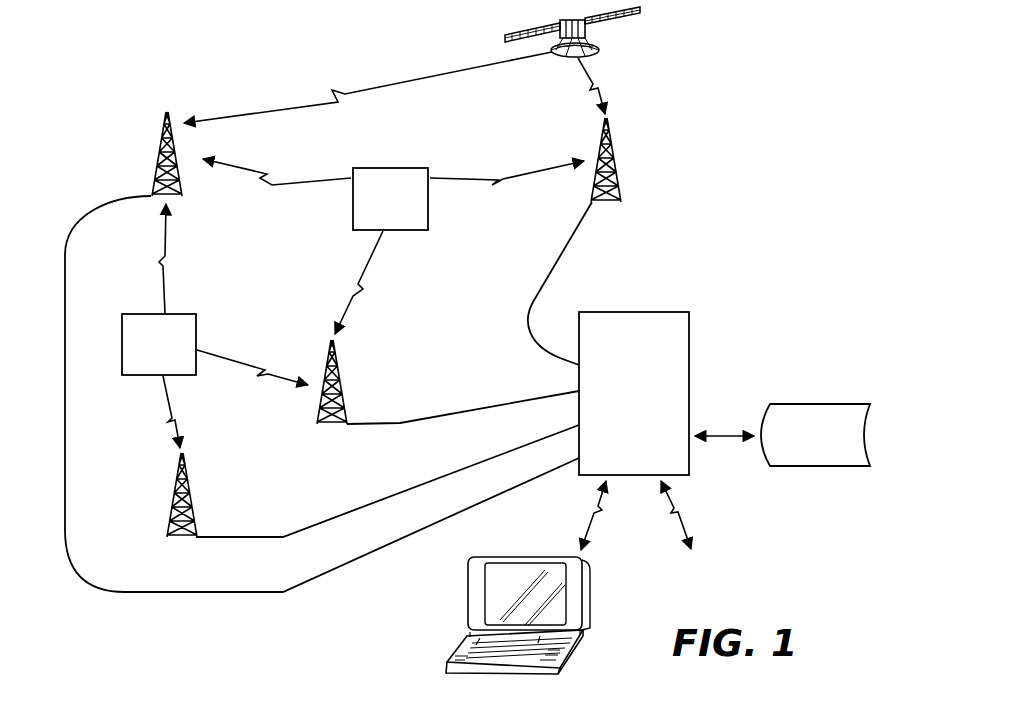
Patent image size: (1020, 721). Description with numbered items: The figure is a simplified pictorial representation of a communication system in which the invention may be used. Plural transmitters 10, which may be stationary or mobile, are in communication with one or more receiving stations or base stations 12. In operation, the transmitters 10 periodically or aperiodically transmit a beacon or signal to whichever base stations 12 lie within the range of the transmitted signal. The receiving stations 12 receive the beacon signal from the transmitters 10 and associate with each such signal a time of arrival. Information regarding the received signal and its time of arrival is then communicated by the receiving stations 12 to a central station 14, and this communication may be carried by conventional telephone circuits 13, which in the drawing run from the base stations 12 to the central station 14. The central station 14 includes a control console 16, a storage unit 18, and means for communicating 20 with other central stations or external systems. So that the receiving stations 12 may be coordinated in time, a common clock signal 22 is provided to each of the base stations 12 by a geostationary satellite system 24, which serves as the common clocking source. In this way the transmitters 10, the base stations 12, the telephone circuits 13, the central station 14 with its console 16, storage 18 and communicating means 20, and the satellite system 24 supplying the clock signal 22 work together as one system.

The transmitter 10 is at (415, 232).
The receiving station 12 is at (152, 152).
The telephone circuit 13 is at (435, 411).
The central station 14 is at (690, 334).
The control console 16 is at (466, 600).
The storage unit 18 is at (823, 467).
The means for communicating 20 is at (683, 520).
The clock signal 22 is at (383, 97).
The satellite system 24 is at (560, 62).